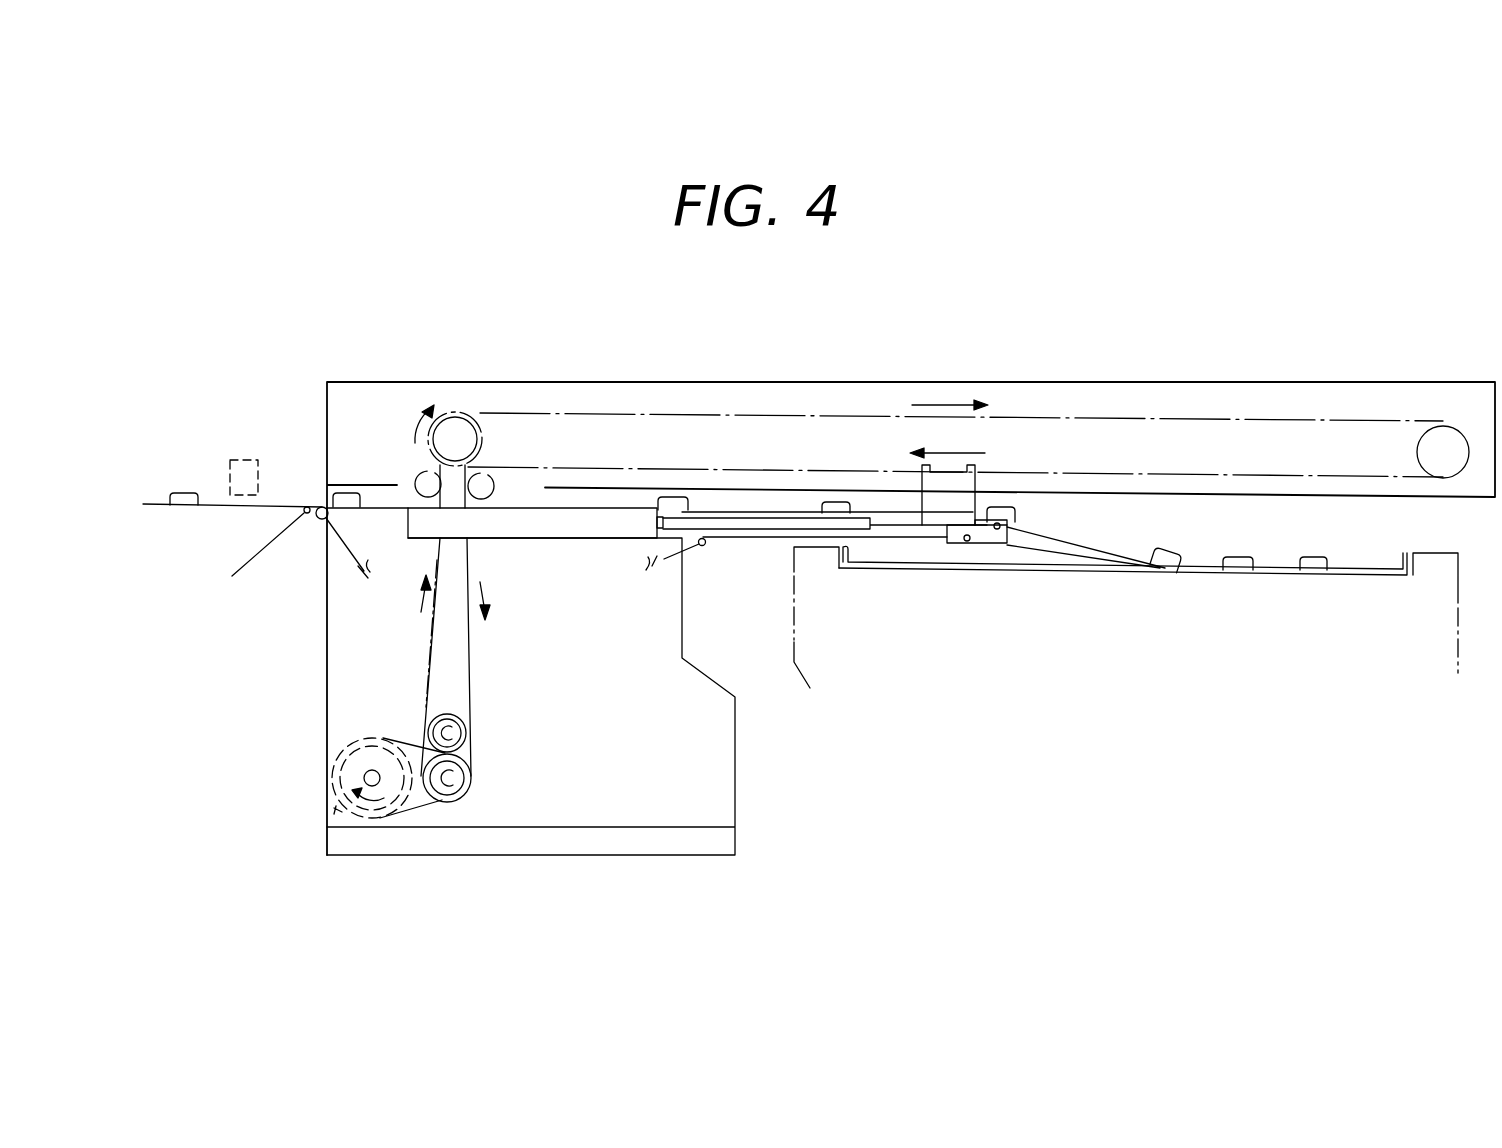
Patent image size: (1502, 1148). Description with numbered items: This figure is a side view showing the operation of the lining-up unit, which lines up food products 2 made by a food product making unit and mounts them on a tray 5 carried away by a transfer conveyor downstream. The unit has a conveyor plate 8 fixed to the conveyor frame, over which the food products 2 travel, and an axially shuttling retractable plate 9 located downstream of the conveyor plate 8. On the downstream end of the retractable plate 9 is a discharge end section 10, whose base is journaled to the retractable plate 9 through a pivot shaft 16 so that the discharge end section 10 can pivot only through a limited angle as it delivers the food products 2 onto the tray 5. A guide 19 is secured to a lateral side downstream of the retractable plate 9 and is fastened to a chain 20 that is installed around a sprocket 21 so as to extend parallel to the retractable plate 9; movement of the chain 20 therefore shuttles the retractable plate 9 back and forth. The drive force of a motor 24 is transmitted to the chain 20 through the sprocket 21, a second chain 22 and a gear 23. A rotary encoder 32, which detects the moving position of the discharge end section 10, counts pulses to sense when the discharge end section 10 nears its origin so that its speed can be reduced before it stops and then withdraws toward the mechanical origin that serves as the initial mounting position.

The food product 2 is at (186, 492).
The tray 5 is at (1377, 568).
The conveyor plate 8 is at (616, 540).
The retractable plate 9 is at (766, 530).
The discharge end section 10 is at (1158, 571).
The pivot shaft 16 is at (997, 530).
The guide 19 is at (978, 487).
The chain 20 is at (713, 417).
The sprocket 21 is at (465, 430).
The chain 22 is at (470, 642).
The gear 23 is at (462, 787).
The motor 24 is at (352, 773).
The rotary encoder 32 is at (448, 713).